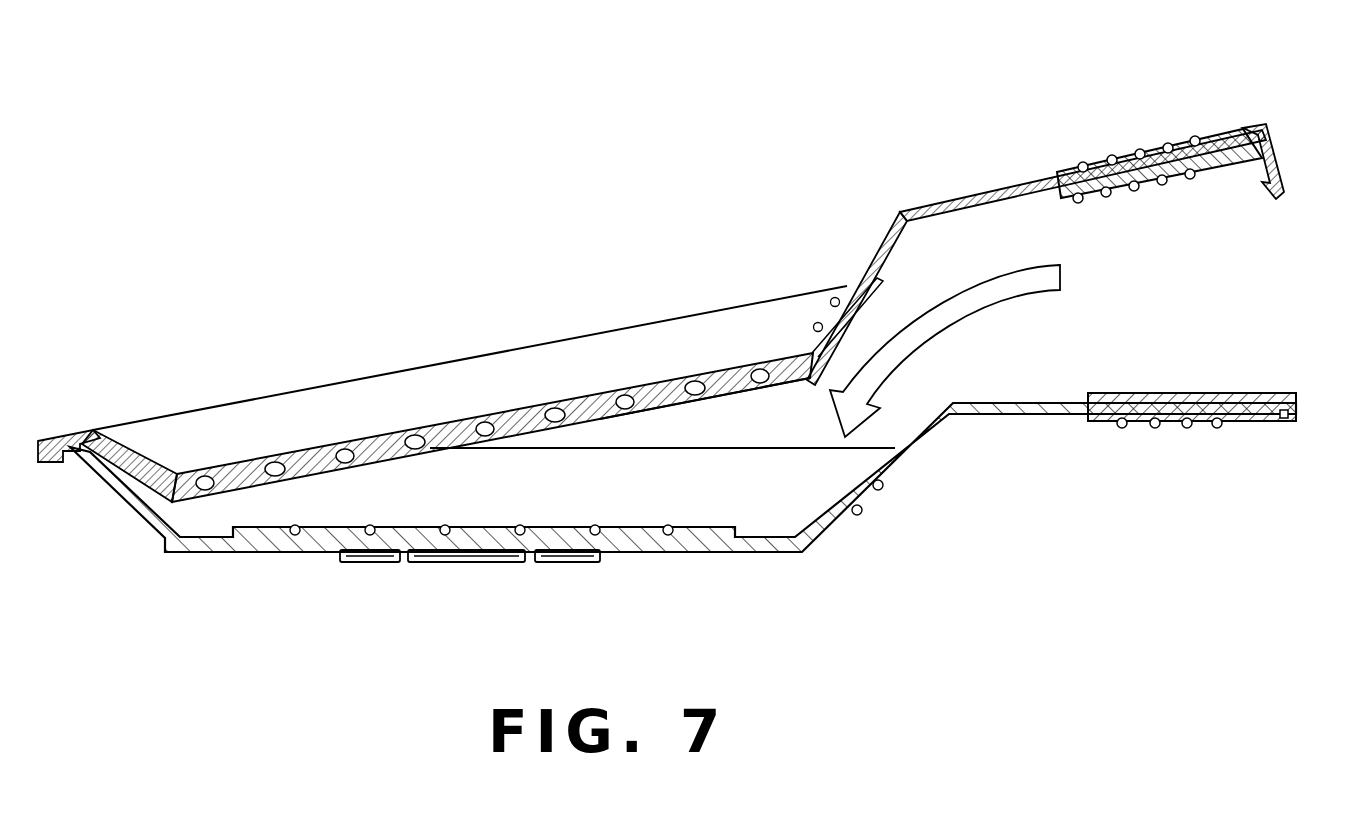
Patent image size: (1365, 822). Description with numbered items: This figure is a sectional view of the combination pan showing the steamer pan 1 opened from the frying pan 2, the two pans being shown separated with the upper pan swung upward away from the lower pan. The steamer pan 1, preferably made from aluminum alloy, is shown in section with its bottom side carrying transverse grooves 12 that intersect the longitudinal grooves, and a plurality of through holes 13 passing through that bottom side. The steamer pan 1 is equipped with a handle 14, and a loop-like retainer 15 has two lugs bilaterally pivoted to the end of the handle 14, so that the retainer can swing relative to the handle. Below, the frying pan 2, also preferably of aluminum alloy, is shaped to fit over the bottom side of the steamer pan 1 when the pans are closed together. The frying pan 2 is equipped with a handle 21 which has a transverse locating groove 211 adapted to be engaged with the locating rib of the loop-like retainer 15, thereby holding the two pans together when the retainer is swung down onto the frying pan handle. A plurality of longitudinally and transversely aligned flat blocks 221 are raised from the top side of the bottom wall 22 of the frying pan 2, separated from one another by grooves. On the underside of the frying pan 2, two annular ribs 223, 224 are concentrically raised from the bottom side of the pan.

The steamer pan 1 is at (880, 243).
The transverse grooves 12 is at (743, 387).
The through holes 13 is at (690, 377).
The handle 14 is at (1233, 150).
The loop-like retainer 15 is at (1277, 149).
The frying pan 2 is at (660, 548).
The handle 21 is at (1243, 392).
The transverse locating groove 211 is at (1283, 425).
The bottom wall 22 is at (760, 522).
The flat blocks 221 is at (443, 530).
The annular rib 223 is at (596, 562).
The annular rib 224 is at (528, 555).